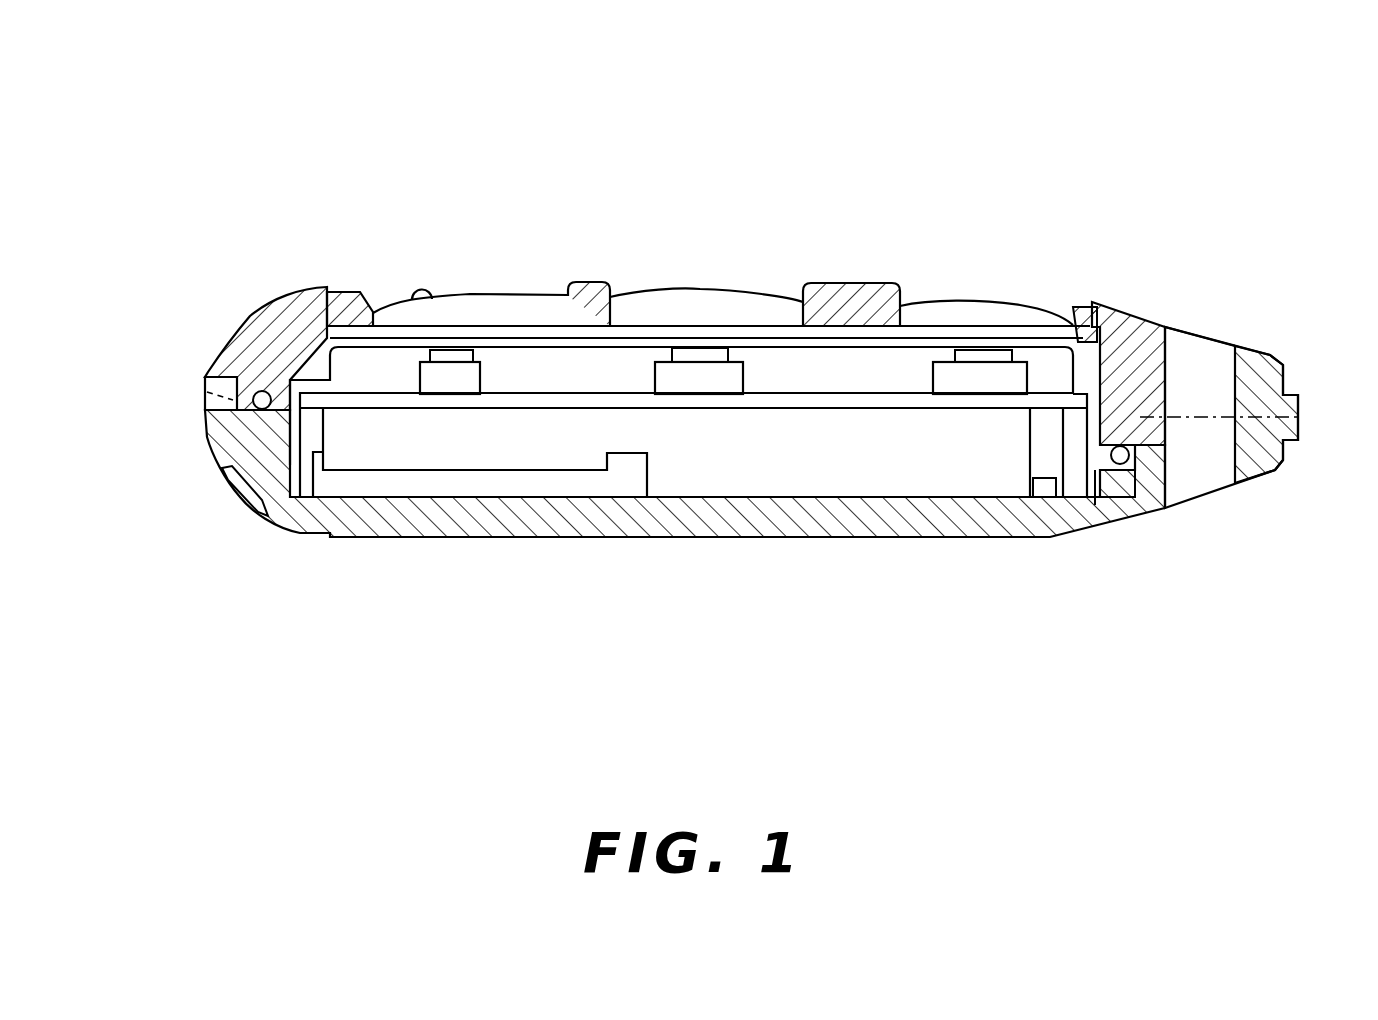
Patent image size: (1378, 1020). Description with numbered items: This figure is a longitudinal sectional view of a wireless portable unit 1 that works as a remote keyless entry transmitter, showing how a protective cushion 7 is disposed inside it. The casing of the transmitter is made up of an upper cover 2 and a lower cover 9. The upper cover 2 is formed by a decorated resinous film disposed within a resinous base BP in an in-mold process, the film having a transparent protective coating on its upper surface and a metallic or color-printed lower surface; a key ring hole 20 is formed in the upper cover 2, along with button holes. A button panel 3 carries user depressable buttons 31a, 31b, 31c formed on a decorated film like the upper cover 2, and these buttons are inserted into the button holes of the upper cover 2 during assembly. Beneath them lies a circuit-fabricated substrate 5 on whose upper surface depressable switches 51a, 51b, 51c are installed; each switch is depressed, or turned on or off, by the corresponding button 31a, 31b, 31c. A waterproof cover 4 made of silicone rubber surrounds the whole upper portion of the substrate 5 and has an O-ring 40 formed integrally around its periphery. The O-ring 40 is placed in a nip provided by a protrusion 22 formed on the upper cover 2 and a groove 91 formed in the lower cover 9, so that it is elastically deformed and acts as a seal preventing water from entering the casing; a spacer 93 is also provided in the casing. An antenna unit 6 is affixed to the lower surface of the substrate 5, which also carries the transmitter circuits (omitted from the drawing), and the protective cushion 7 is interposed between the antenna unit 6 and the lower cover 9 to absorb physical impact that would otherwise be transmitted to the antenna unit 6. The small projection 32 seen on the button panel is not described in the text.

The wireless portable unit 1 is at (1115, 140).
The upper cover 2 is at (257, 343).
The protrusion 22 is at (207, 385).
The waterproof cover 4 is at (332, 290).
The projection on glass 32 is at (410, 290).
The button panel 3 is at (545, 335).
The user depressable button 31a is at (932, 313).
The user depressable button 31b is at (676, 303).
The user depressable button 31c is at (465, 315).
The depressable switch 51a is at (1080, 333).
The depressable switch 51b is at (712, 371).
The depressable switch 51c is at (487, 371).
The circuit-fabricated substrate 5 is at (912, 397).
The O-ring 40 is at (300, 530).
The antenna unit 6 is at (385, 460).
The protective cushion 7 is at (624, 483).
The resinous base BP is at (1158, 323).
The lower cover 9 is at (263, 517).
The groove 91 is at (287, 513).
The spacer 93 is at (1106, 527).
The key ring hole 20 is at (1230, 337).